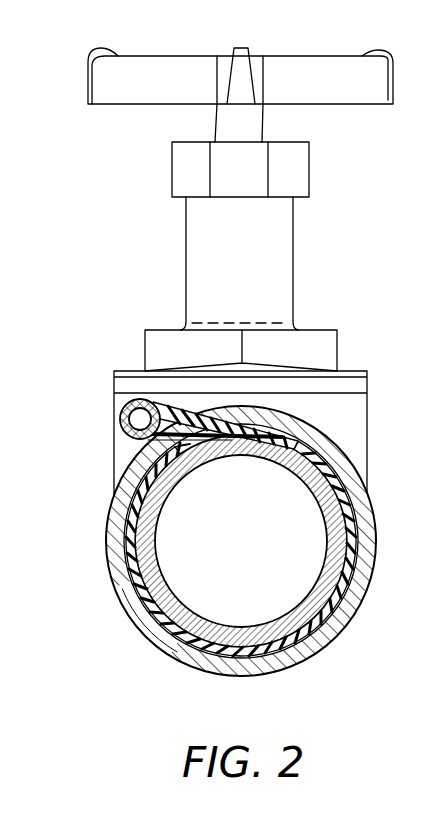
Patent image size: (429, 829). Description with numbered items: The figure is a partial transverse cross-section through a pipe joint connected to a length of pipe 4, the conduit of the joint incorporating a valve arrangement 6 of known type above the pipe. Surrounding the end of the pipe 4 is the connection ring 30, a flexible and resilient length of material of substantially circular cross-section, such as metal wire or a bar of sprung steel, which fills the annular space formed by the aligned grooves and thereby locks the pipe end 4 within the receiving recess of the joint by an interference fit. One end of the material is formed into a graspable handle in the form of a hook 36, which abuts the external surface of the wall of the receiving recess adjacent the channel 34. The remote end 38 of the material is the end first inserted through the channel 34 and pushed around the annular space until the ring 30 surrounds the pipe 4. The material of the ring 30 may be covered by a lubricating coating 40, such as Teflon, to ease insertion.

The pipe 4 is at (287, 623).
The valve arrangement 6 is at (285, 256).
The connection ring 30 is at (182, 632).
The channel 34 is at (205, 441).
The hook 36 is at (120, 418).
The end 38 is at (190, 443).
The lubricating coating 40 is at (122, 583).